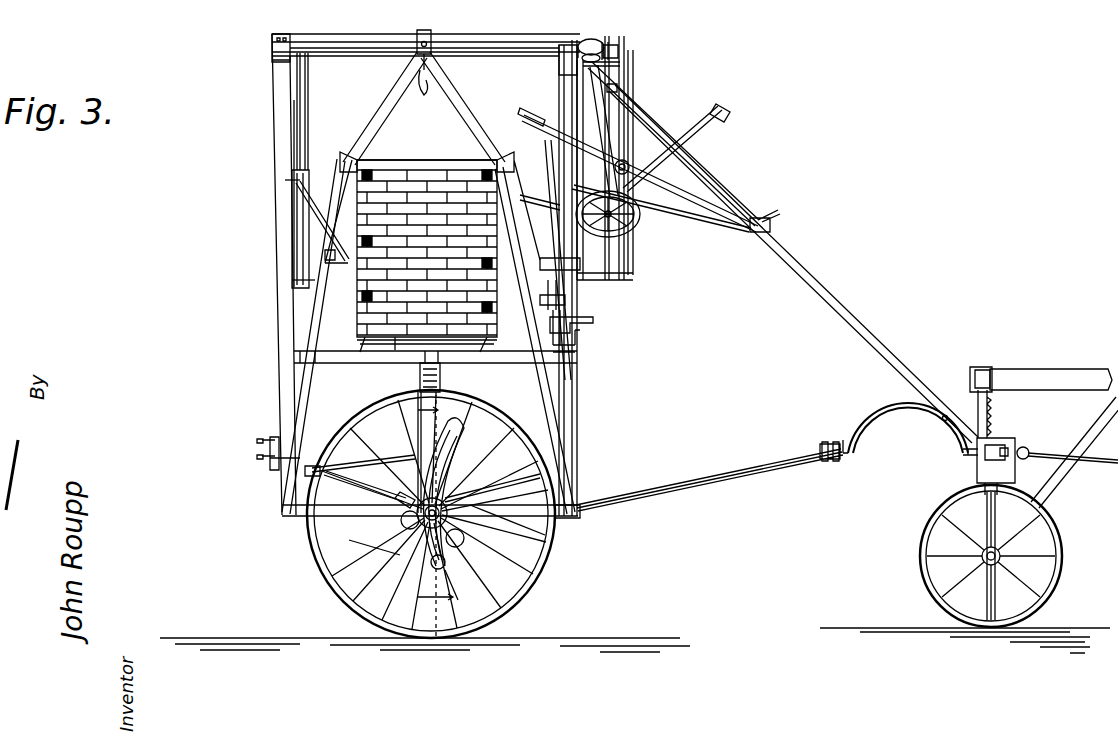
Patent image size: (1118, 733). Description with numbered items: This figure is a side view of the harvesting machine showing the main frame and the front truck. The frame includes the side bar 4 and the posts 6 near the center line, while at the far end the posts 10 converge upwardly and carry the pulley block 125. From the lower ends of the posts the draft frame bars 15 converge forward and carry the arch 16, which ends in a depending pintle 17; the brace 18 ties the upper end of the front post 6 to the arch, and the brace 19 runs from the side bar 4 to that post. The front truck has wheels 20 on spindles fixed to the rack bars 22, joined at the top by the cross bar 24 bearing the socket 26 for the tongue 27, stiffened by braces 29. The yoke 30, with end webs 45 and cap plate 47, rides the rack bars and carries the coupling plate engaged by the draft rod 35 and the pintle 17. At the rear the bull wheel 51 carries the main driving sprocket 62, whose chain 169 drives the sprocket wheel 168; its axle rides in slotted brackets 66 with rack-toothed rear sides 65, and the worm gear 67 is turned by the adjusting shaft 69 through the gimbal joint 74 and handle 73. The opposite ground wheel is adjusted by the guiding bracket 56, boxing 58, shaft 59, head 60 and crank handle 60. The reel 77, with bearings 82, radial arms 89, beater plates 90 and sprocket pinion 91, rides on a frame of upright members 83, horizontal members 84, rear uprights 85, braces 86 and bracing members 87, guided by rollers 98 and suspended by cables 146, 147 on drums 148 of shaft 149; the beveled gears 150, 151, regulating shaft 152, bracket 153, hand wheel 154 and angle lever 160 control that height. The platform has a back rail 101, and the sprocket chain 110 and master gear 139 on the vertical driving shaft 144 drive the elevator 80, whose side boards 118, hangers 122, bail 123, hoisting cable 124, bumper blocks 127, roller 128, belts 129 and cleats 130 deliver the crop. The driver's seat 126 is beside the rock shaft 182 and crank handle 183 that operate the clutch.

The side bar 4 is at (310, 535).
The posts 6 is at (287, 315).
The posts 10 is at (345, 398).
The draft frame bars 15 is at (725, 470).
The arch 16 is at (862, 425).
The pintle 17 is at (976, 458).
The brace 18 is at (805, 270).
The brace 19 is at (604, 107).
The wheels 20 is at (1056, 585).
The rack bars 22 is at (980, 400).
The bridge piece or cross bar 24 is at (972, 368).
The socket or bracket 26 is at (988, 370).
The tongue or pole 27 is at (1056, 375).
The braces 29 is at (1056, 478).
The yoke or coupling head 30 is at (1028, 442).
The draft rod 35 is at (1055, 450).
The end webs 45 is at (985, 475).
The back plate or cap plate 47 is at (975, 497).
The driving or bull wheel 51 is at (508, 598).
The guiding bracket 56 is at (440, 380).
The boxing 58 is at (420, 455).
The shaft 59 is at (340, 465).
The head 60 is at (270, 437).
The main driving sprocket 62 is at (466, 546).
The rear sides 65 is at (395, 560).
The slotted brackets 66 is at (461, 585).
The worm gear 67 is at (418, 582).
The adjusting shaft 69 is at (342, 478).
The handle 73 is at (273, 462).
The gimbal joint 74 is at (319, 481).
The reel 77 is at (673, 144).
The elevator 80 is at (427, 244).
The bearings 82 is at (640, 202).
The upright members 83 is at (626, 270).
The horizontal members 84 is at (610, 296).
The upright members 85 is at (294, 247).
The braces 86 is at (312, 188).
The bracing members 87 is at (565, 147).
The radial arms 89 is at (630, 112).
The blades or beater plates 90 is at (729, 113).
The sprocket pinion 91 is at (626, 160).
The rollers 98 is at (292, 172).
The back rail 101 is at (300, 282).
The sprocket chain 110 is at (575, 333).
The side boards or wings 118 is at (349, 156).
The brackets or hangers 122 is at (325, 264).
The bail 123 is at (414, 96).
The hoisting cable 124 is at (452, 115).
The pulley block 125 is at (432, 37).
The driver's seat 126 is at (567, 280).
The bumper blocks 127 is at (478, 168).
The roller 128 is at (430, 165).
The endless belts or bands 129 is at (369, 350).
The cleats or cross bars 130 is at (428, 332).
The master beveled gear 139 is at (628, 312).
The vertical driving shaft 144 is at (560, 445).
The cable 146 is at (292, 80).
The cable 147 is at (304, 90).
The drums 148 is at (618, 45).
The shaft 149 is at (496, 52).
The beveled gear 150 is at (592, 39).
The beveled gear 151 is at (608, 66).
The regulating shaft 152 is at (618, 90).
The bracket and bracing member 153 is at (763, 222).
The hand wheel 154 is at (640, 212).
The angle lever 160 is at (548, 218).
The sprocket wheel 168 is at (560, 518).
The sprocket chain 169 is at (520, 530).
The rock shaft 182 is at (571, 385).
The crank handle 183 is at (575, 306).